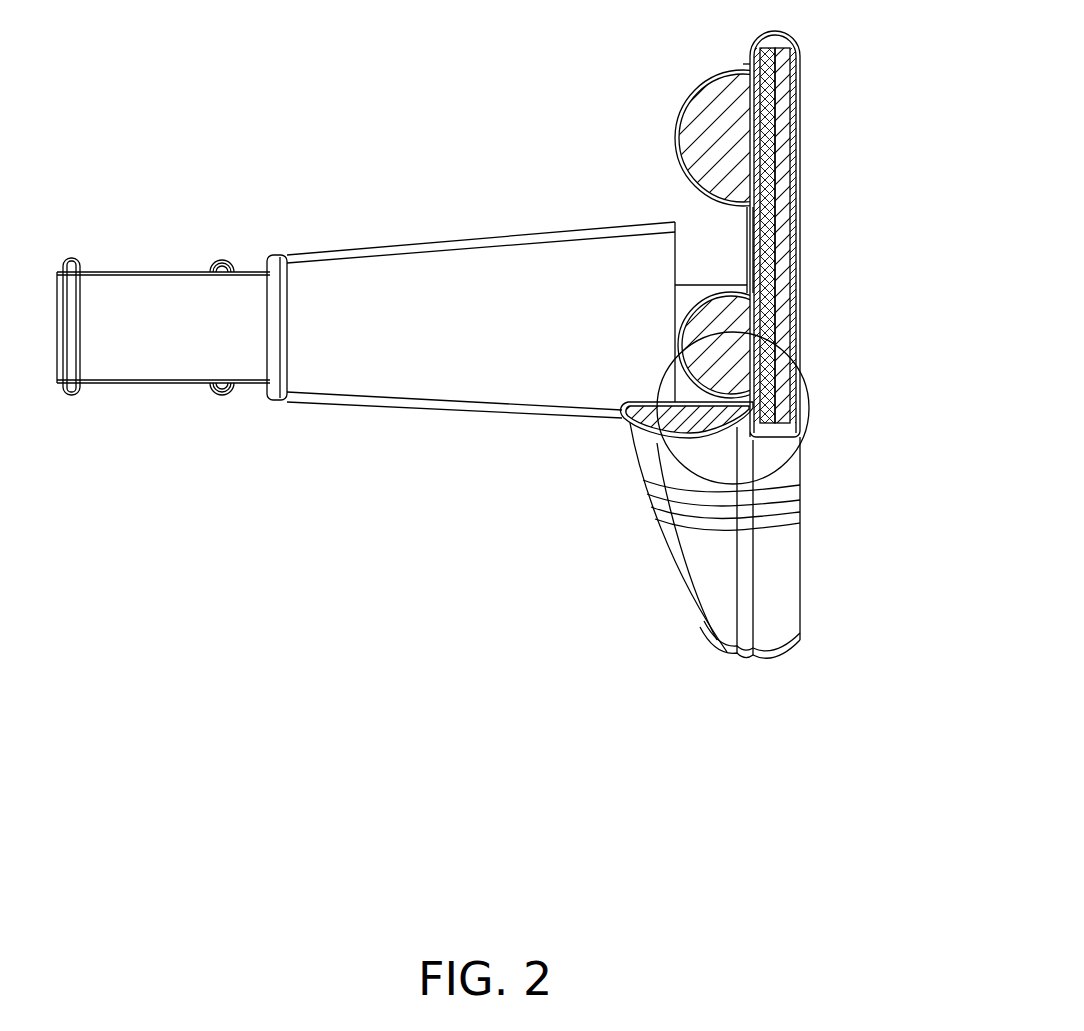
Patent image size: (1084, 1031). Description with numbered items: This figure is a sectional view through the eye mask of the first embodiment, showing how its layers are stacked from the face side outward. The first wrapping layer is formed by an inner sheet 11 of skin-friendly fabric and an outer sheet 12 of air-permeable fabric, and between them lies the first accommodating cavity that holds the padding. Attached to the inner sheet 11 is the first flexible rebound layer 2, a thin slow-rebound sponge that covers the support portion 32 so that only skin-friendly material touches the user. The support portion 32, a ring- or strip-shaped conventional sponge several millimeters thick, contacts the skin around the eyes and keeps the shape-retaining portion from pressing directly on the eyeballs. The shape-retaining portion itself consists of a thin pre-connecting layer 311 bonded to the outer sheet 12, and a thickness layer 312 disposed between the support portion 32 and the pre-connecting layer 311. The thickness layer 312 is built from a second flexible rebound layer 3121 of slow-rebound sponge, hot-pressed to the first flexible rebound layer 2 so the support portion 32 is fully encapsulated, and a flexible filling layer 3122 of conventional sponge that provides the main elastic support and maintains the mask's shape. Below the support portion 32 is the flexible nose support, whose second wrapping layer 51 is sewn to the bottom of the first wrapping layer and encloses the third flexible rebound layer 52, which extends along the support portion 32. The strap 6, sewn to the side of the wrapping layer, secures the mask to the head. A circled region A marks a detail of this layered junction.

The first flexible rebound layer 2 is at (711, 204).
The strap 6 is at (470, 280).
The inner sheet 11 is at (688, 99).
The outer sheet 12 is at (864, 234).
The support portion 32 is at (742, 88).
The second wrapping layer 51 is at (656, 463).
The third flexible rebound layer 52 is at (638, 412).
The pre-connecting layer 311 is at (788, 209).
The thickness layer 312 is at (869, 235).
The second flexible rebound layer 3121 is at (770, 125).
The flexible filling layer 3122 is at (782, 164).
The detail region A is at (814, 426).